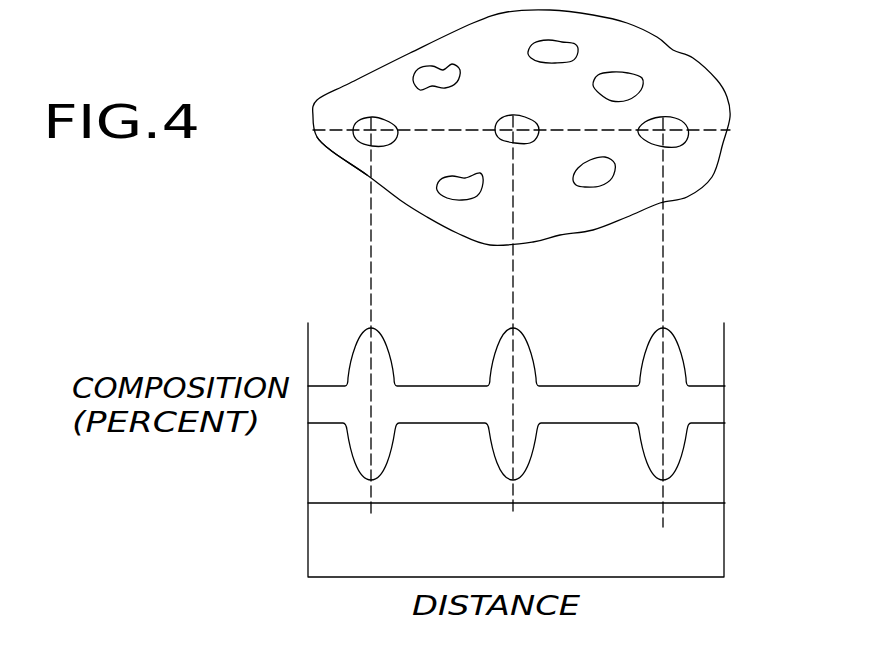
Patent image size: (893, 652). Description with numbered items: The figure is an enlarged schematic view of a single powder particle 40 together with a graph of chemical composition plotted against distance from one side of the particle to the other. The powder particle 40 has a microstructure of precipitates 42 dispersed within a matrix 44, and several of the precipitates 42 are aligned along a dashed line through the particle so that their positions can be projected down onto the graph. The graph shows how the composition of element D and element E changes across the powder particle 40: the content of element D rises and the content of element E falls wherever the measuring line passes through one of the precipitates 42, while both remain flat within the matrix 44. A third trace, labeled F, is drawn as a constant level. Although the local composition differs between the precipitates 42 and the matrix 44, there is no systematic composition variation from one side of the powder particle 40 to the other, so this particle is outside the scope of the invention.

The powder particle 40 is at (358, 67).
The precipitates 42 is at (421, 75).
The matrix 44 is at (352, 155).
The element D is at (435, 387).
The element E is at (422, 425).
The composition profile of third constituent F is at (575, 503).